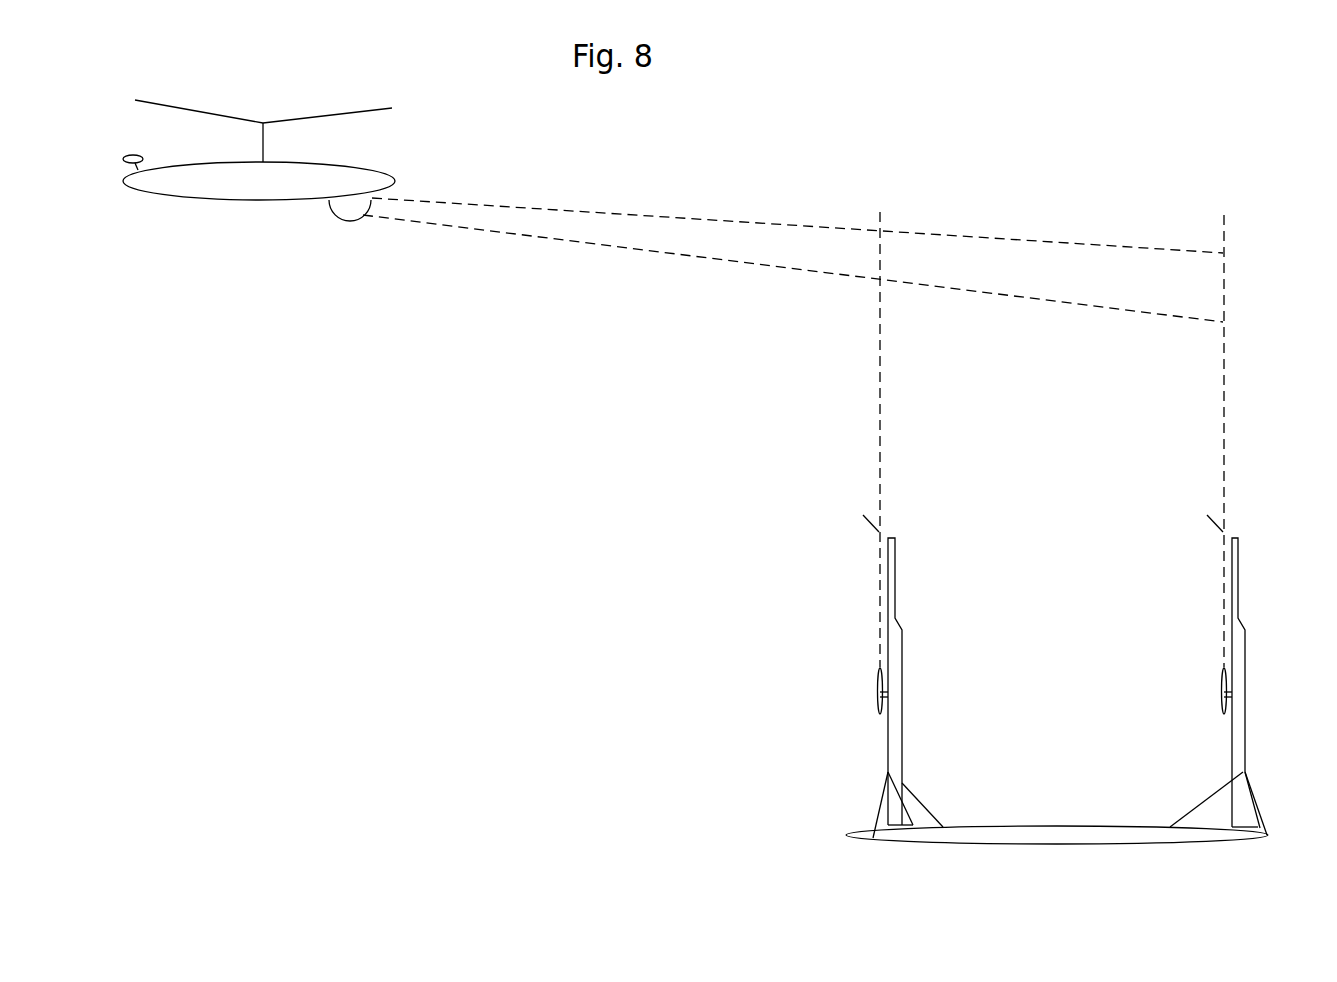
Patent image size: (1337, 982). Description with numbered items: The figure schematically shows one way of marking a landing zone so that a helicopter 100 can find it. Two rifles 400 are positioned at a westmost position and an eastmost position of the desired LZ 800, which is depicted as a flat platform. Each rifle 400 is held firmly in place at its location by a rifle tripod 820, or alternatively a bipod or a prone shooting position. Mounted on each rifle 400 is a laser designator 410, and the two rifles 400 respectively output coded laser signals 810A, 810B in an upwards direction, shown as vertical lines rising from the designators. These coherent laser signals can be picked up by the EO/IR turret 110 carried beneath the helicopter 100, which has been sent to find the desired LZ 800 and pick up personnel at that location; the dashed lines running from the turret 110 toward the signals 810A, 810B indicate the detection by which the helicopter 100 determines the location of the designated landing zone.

The helicopter 100 is at (248, 202).
The EO/IR turret 110 is at (350, 215).
The rifle 400 is at (862, 615).
The laser designator 410 is at (877, 700).
The desired LZ 800 is at (1052, 844).
The coded laser signal 810A is at (880, 413).
The coded laser signal 810B is at (1224, 447).
The rifle tripod 820 is at (920, 802).